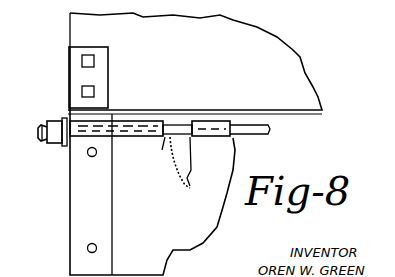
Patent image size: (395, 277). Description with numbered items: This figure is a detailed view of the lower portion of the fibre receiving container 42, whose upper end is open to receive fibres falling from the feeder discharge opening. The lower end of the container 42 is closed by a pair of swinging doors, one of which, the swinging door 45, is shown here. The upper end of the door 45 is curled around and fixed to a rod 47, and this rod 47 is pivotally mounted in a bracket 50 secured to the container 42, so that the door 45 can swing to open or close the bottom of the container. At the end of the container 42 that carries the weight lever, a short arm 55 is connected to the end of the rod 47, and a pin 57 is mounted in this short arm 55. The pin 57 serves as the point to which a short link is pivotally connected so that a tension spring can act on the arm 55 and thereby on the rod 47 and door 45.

The fibre receiving container 42 is at (195, 63).
The swinging door 45 is at (152, 161).
The rod 47 is at (183, 121).
The bracket 50 is at (68, 76).
The short arm 55 is at (53, 119).
The pin 57 is at (38, 132).